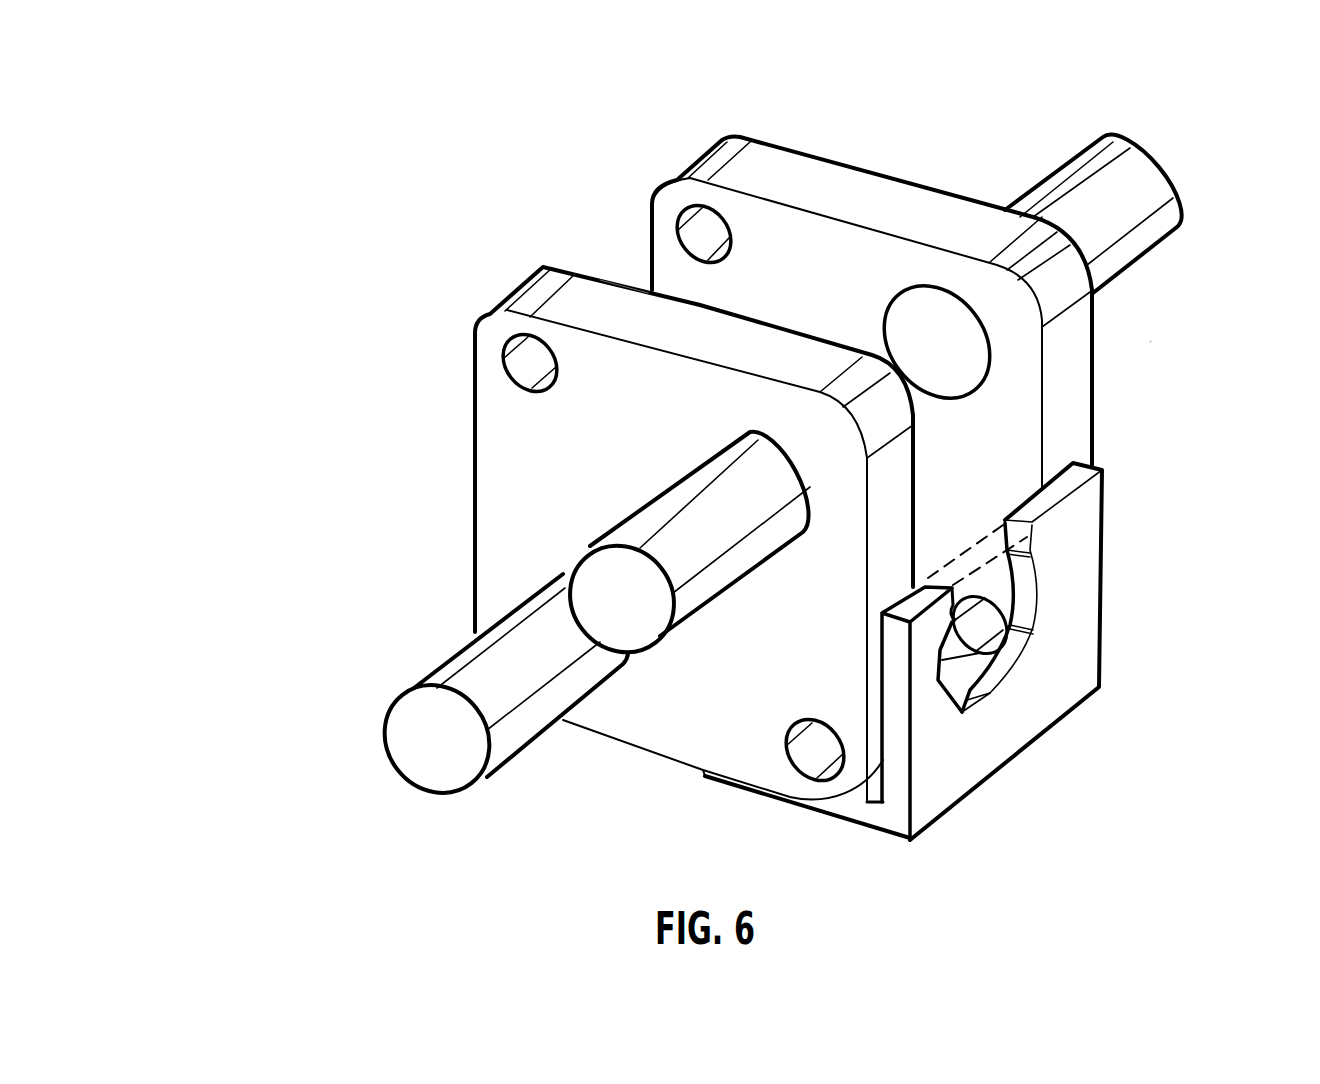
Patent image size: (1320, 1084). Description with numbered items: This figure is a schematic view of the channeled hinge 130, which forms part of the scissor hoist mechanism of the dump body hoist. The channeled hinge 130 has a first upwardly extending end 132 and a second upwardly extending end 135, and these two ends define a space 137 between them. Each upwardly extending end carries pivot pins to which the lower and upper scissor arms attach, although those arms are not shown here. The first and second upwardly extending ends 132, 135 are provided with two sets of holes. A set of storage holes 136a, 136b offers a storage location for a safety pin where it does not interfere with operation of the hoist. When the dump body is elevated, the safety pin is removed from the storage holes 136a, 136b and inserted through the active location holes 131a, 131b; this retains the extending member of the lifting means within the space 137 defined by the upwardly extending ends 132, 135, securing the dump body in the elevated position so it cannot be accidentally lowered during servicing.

The channeled hinge 130 is at (1150, 342).
The active location hole 131a is at (730, 228).
The active location hole 131b is at (500, 355).
The first upwardly extending end 132 is at (908, 185).
The second upwardly extending end 135 is at (650, 735).
The storage location hole 136a is at (815, 763).
The storage location hole 136b is at (988, 625).
The space 137 is at (623, 257).